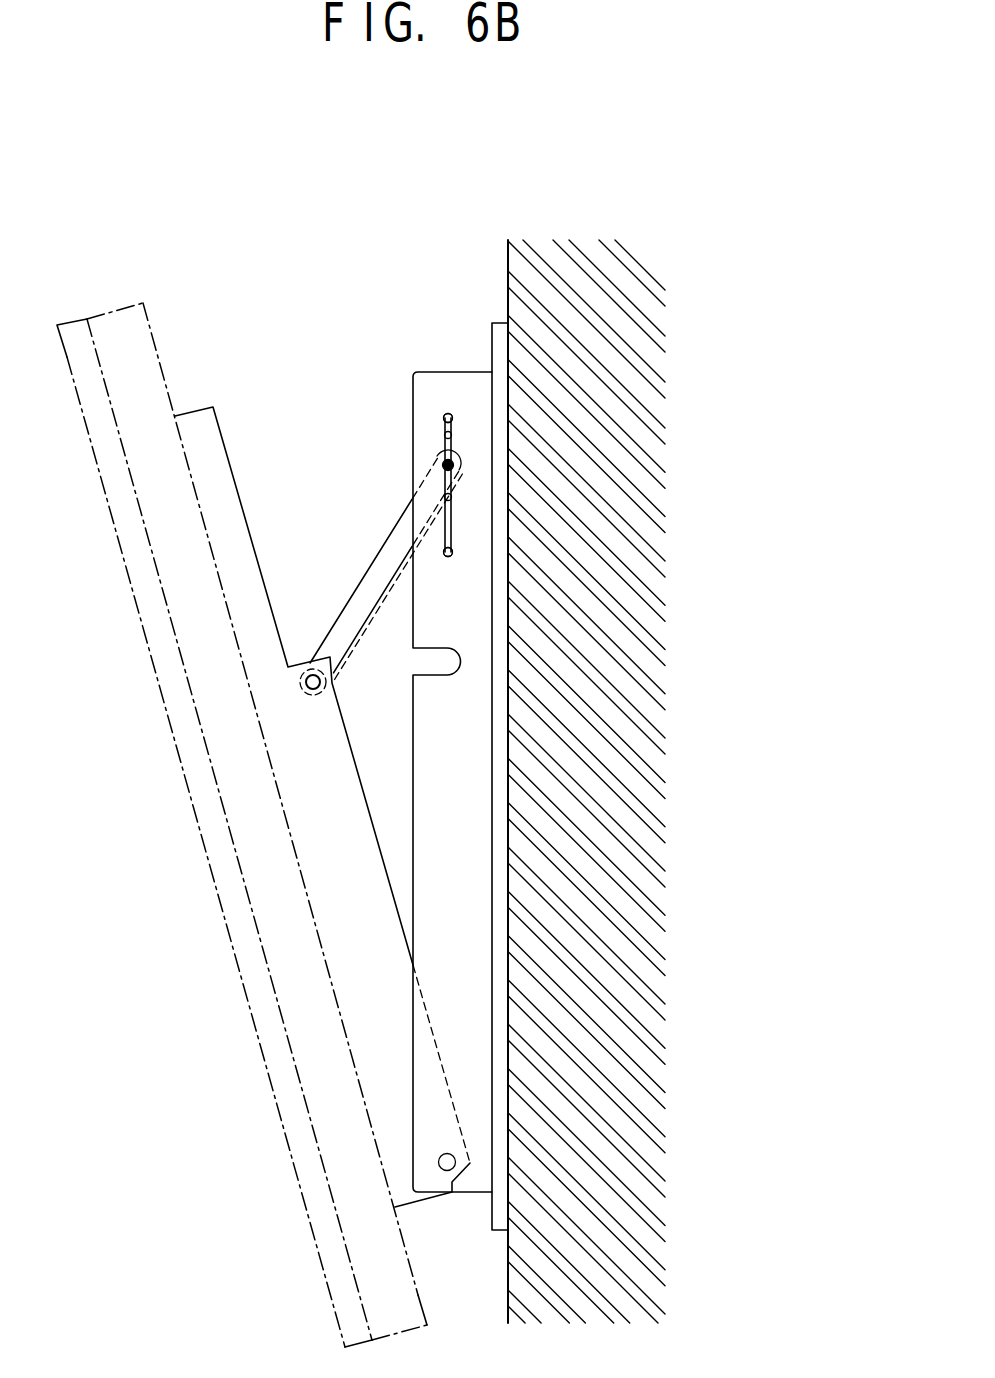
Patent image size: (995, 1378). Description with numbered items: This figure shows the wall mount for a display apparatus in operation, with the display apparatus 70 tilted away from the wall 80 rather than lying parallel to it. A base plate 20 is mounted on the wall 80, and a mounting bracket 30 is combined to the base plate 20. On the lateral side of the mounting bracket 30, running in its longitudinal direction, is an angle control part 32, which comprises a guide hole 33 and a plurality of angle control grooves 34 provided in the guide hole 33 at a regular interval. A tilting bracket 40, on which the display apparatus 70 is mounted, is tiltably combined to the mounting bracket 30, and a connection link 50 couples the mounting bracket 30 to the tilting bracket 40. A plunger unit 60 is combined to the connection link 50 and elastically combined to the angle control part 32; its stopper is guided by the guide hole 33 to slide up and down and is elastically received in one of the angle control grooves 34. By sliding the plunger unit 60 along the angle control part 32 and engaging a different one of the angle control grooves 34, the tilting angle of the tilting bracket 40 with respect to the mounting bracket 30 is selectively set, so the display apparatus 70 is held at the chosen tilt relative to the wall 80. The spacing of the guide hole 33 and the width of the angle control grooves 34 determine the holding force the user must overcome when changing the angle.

The base plate 20 is at (492, 340).
The mounting bracket 30 is at (445, 370).
The angle control part 32 is at (737, 458).
The guide hole 33 is at (452, 552).
The angle control grooves 34 is at (452, 420).
The tilting bracket 40 is at (192, 412).
The connection link 50 is at (339, 614).
The plunger unit 60 is at (447, 465).
The display apparatus 70 is at (258, 1042).
The wall 80 is at (617, 583).